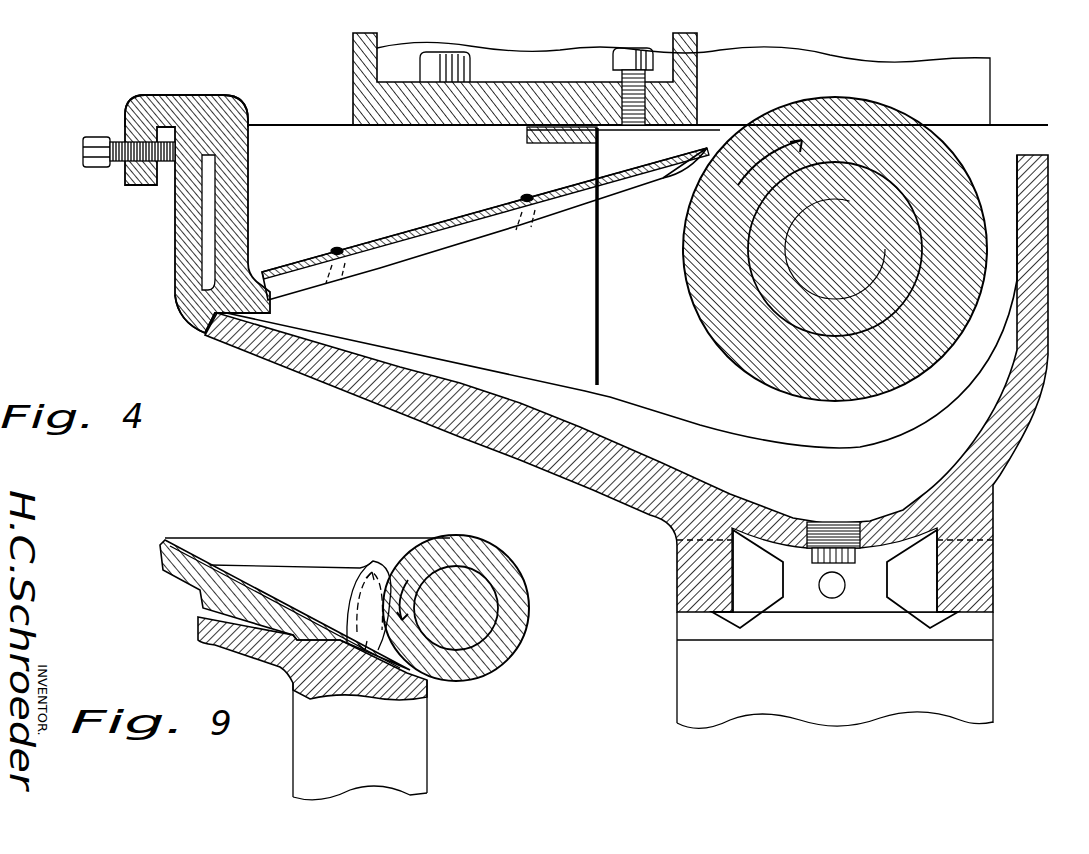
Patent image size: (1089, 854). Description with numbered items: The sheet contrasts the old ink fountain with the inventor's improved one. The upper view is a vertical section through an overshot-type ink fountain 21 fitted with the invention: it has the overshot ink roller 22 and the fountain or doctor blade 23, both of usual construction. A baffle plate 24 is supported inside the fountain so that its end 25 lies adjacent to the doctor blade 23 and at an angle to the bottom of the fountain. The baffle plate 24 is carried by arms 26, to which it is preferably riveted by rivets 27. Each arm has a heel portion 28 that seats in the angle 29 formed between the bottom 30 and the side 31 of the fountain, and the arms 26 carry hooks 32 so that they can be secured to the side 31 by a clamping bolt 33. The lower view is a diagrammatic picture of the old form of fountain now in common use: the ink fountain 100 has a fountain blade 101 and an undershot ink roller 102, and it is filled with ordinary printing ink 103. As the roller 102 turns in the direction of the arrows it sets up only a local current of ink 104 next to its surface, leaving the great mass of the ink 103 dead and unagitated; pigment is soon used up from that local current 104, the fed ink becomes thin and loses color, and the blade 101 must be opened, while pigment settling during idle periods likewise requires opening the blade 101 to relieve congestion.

In FIG. 4, the ink fountain 21 is at (325, 98).
In FIG. 4, the overshot ink roller 22 is at (908, 108).
In FIG. 4, the doctor blade 23 is at (718, 120).
In FIG. 4, the baffle plate 24 is at (478, 210).
In FIG. 4, the end of baffle plate 25 is at (702, 160).
In FIG. 4, the arms 26 is at (445, 244).
In FIG. 4, the rivets 27 is at (322, 290).
In FIG. 4, the heel portion 28 is at (214, 328).
In FIG. 4, the angle 29 is at (185, 305).
In FIG. 4, the bottom of the fountain 30 is at (342, 390).
In FIG. 4, the side of the fountain 31 is at (182, 245).
In FIG. 4, the hooks 32 is at (150, 100).
In FIG. 4, the clamping bolt 33 is at (103, 170).
In FIG. 9, the ink fountain 100 is at (325, 514).
In FIG. 9, the fountain blade 101 is at (380, 698).
In FIG. 9, the undershot ink roller 102 is at (472, 665).
In FIG. 9, the ink 103 is at (278, 578).
In FIG. 9, the local current of ink 104 is at (362, 580).